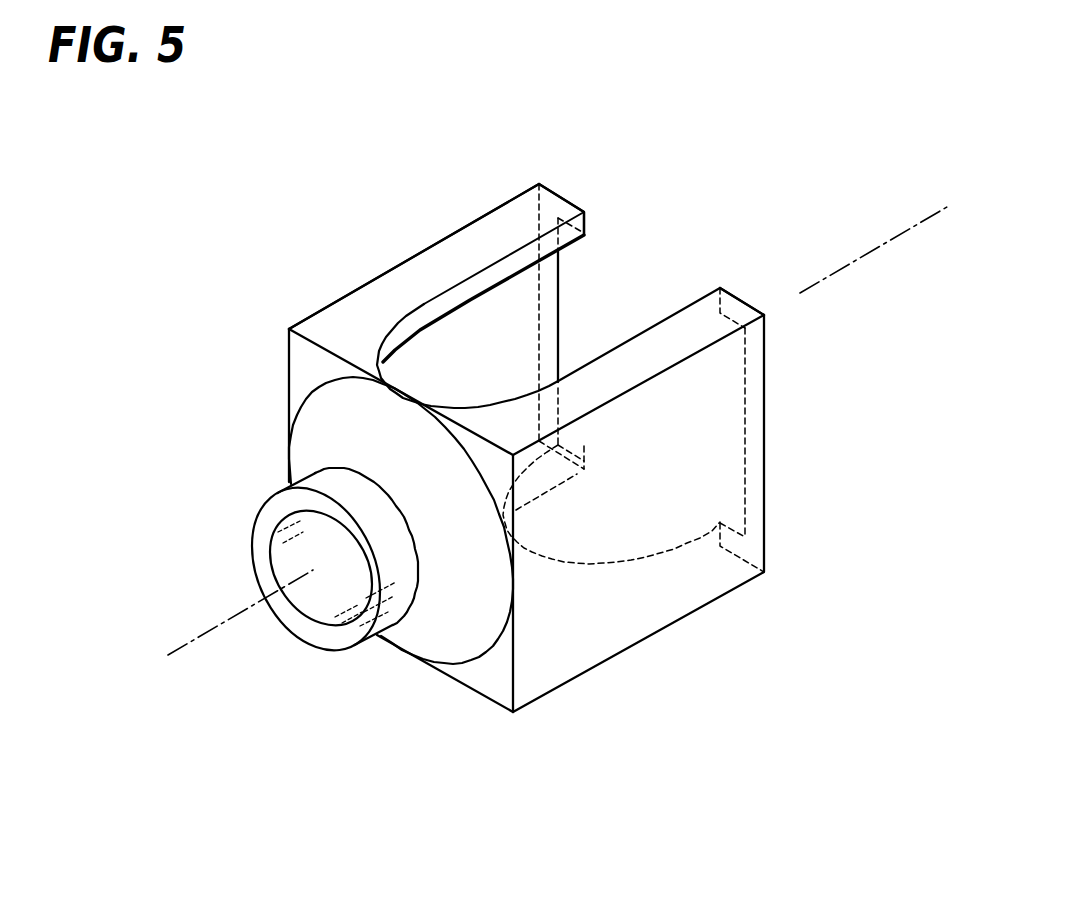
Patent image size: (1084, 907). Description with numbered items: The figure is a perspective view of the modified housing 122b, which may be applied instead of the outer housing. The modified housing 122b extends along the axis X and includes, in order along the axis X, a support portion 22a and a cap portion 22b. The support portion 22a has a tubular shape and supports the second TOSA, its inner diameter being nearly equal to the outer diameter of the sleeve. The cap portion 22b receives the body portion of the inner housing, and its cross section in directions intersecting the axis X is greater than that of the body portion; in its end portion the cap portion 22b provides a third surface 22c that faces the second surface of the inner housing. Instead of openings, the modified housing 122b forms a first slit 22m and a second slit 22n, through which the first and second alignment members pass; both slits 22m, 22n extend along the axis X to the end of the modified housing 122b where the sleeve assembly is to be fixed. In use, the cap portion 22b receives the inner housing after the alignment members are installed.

The modified housing 122b is at (562, 431).
The support portion 22a is at (387, 637).
The cap portion 22b is at (496, 230).
The third surface 22c is at (586, 222).
The first slit 22m is at (617, 287).
The second slit 22n is at (646, 499).
The axis X is at (863, 257).